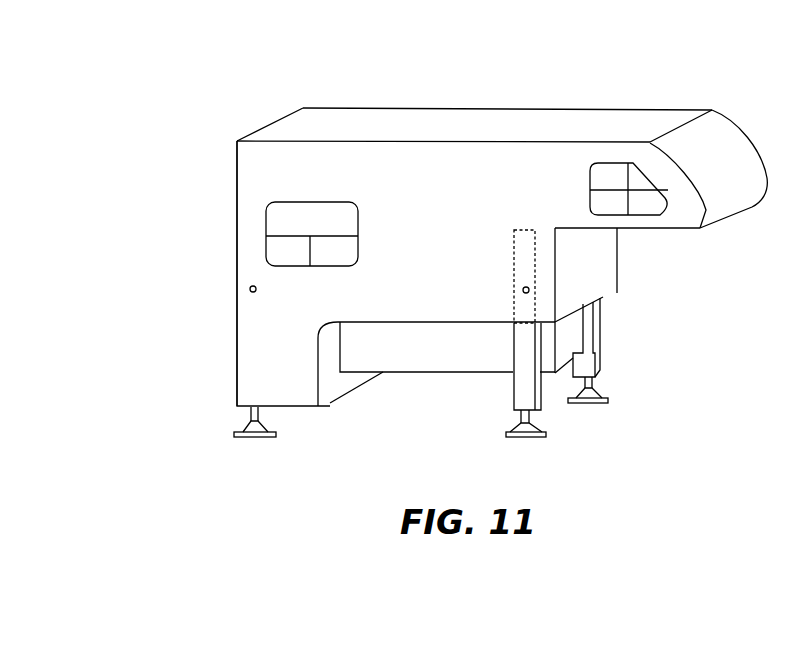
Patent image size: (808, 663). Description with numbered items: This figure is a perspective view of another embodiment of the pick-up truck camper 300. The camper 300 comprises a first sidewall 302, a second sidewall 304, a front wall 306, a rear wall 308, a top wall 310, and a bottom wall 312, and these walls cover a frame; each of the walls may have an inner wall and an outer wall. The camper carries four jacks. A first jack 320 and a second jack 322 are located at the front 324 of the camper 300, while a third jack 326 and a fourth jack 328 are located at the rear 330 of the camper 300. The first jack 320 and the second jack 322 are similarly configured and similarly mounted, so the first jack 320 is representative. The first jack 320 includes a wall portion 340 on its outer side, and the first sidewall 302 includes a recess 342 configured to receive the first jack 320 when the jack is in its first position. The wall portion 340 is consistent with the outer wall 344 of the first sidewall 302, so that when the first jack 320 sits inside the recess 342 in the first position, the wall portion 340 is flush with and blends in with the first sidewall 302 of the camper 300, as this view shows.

The pick-up truck camper 300 is at (576, 99).
The first sidewall 302 is at (412, 173).
The second sidewall 304 is at (370, 108).
The front wall 306 is at (723, 167).
The rear wall 308 is at (237, 208).
The top wall 310 is at (490, 122).
The bottom wall 312 is at (472, 328).
The first jack 320 is at (526, 397).
The second jack 322 is at (602, 355).
The front 324 is at (600, 250).
The third jack 326 is at (257, 438).
The fourth jack 328 is at (330, 403).
The rear 330 is at (256, 330).
The wall portion 340 is at (530, 268).
The recess 342 is at (540, 250).
The outer wall 344 is at (327, 173).